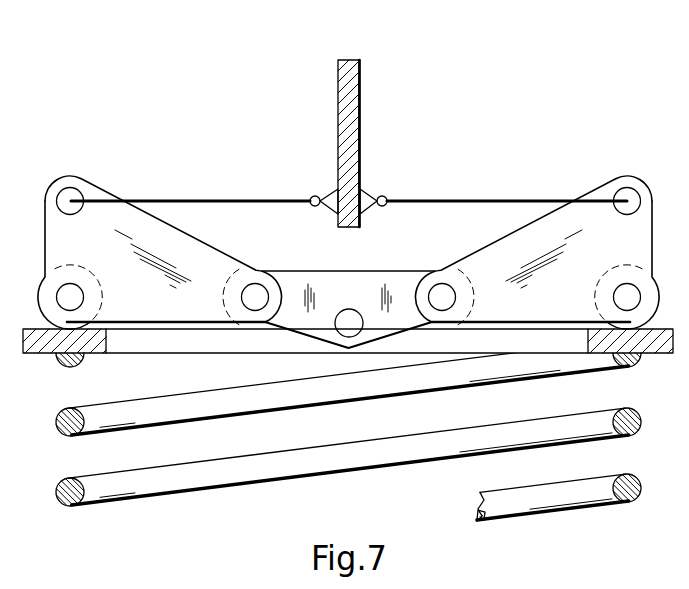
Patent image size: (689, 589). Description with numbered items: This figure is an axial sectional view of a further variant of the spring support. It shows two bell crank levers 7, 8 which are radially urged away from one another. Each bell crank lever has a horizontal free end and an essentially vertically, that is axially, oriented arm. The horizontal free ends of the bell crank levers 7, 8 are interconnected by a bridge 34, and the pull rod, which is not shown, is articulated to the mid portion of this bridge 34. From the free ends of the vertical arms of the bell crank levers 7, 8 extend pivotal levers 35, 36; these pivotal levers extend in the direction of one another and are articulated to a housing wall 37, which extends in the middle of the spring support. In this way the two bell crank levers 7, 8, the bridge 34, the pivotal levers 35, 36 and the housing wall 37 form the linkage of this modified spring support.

The bell crank lever 7 is at (133, 218).
The bell crank lever 8 is at (553, 223).
The bridge 34 is at (322, 298).
The pivotal lever 35 is at (200, 203).
The pivotal lever 36 is at (428, 201).
The housing wall 37 is at (342, 78).